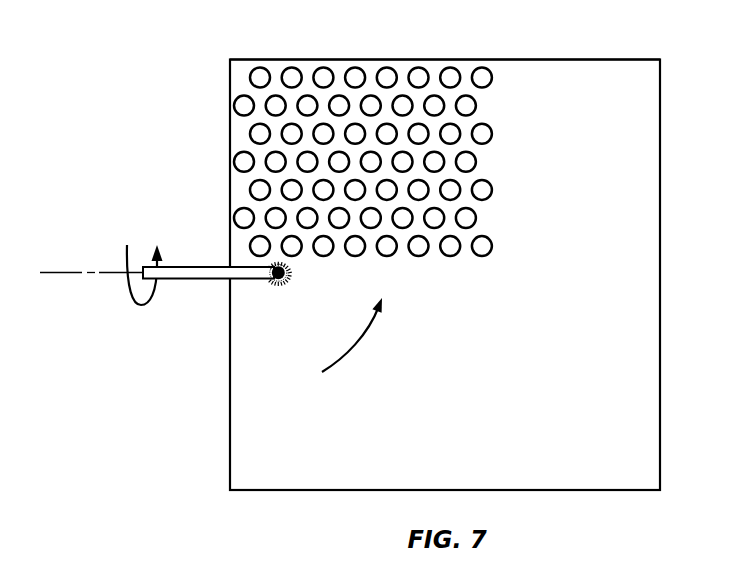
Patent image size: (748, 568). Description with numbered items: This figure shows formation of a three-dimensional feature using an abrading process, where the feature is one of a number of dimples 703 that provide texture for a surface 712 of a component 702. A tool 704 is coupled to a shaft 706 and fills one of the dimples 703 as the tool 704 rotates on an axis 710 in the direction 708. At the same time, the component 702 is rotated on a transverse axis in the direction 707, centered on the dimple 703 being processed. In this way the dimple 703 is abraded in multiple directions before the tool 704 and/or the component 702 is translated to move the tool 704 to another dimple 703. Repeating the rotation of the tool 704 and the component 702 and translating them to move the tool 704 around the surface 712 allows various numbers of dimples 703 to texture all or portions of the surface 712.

The component 702 is at (660, 360).
The dimple 703 is at (277, 282).
The tool 704 is at (292, 290).
The shaft 706 is at (193, 266).
The direction 707 is at (360, 345).
The direction 708 is at (140, 306).
The axis 710 is at (64, 271).
The surface 712 is at (578, 73).